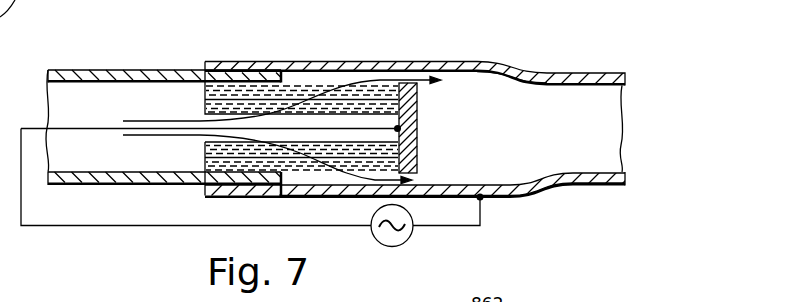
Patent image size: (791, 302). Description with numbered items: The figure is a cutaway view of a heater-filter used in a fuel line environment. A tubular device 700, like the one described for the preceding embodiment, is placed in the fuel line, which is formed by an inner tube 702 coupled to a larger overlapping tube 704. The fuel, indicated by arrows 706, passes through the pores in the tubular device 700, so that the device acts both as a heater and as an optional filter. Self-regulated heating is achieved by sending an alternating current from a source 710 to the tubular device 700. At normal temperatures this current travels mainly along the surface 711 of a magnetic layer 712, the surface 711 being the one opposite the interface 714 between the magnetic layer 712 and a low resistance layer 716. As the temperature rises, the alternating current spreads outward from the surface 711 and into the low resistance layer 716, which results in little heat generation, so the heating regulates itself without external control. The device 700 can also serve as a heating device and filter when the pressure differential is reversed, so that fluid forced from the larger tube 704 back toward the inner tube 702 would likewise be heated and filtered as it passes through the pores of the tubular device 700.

The tubular device 700 is at (192, 101).
The inner tube 702 is at (100, 70).
The larger overlapping tube 704 is at (440, 61).
The fuel flow arrows 706 is at (152, 136).
The a.c. current source 710 is at (373, 232).
The surface of magnetic layer 711 is at (418, 124).
The magnetic layer 712 is at (217, 110).
The interface 714 is at (200, 177).
The low resistance layer 716 is at (247, 92).